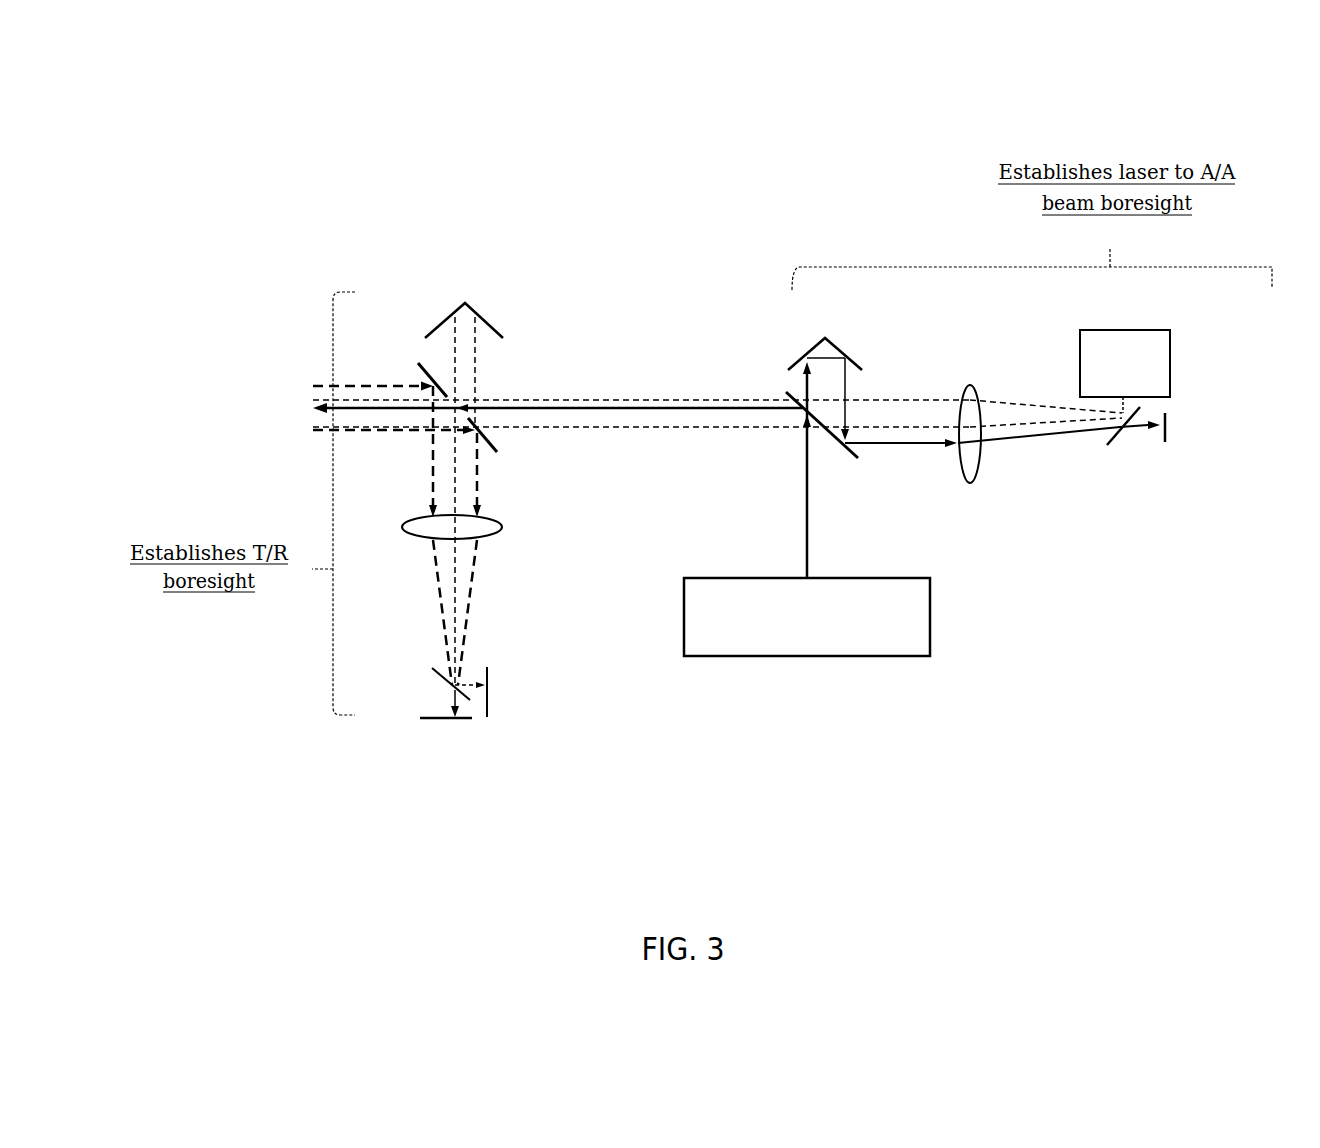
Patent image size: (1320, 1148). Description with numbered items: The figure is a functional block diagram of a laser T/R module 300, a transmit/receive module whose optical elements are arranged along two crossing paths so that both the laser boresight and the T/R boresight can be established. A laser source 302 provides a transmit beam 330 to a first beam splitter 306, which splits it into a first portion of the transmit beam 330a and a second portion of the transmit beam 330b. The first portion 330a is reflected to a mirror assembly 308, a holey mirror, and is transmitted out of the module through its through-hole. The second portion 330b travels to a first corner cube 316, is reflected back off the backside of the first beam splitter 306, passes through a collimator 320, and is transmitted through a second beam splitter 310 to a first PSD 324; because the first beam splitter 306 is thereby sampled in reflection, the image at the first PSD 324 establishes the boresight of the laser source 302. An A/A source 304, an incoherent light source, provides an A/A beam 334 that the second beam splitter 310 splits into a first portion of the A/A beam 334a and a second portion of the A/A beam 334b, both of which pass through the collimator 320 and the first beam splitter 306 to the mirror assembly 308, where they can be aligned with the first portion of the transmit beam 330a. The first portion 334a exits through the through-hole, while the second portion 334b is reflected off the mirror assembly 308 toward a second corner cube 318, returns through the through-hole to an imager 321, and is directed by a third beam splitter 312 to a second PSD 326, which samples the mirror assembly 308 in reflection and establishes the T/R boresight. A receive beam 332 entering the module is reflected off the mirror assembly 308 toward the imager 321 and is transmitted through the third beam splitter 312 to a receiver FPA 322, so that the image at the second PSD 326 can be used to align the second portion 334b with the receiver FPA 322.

The laser T/R module 300 is at (1084, 106).
The laser source 302 is at (807, 617).
The A/A source 304 is at (1125, 357).
The first beam splitter 306 is at (831, 439).
The mirror assembly 308 is at (502, 447).
The second beam splitter 310 is at (1119, 443).
The third beam splitter 312 is at (435, 686).
The first corner cube 316 is at (825, 339).
The second corner cube 318 is at (464, 479).
The collimator 320 is at (965, 418).
The imager 321 is at (473, 526).
The receiver FPA 322 is at (446, 735).
The first PSD 324 is at (1187, 427).
The second PSD 326 is at (512, 692).
The transmit beam 330 is at (805, 523).
The first portion of the transmit beam 330a is at (663, 407).
The second portion of the transmit beam 330b is at (912, 445).
The receive beam 332 is at (387, 383).
The A/A beam 334 is at (1122, 408).
The first portion of the A/A beam 334a is at (705, 400).
The second portion of the A/A beam 334b is at (688, 425).